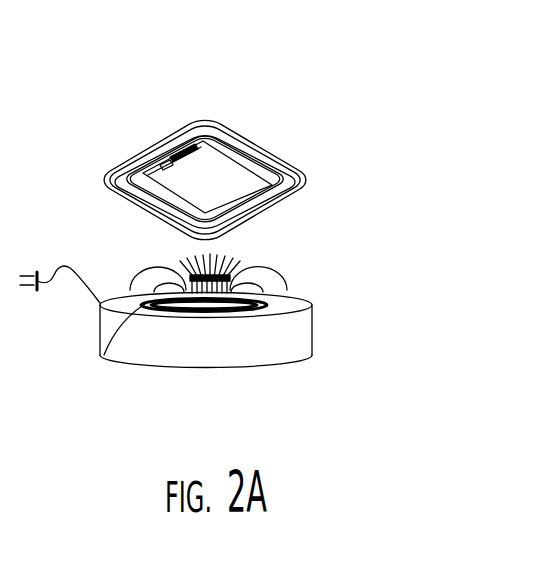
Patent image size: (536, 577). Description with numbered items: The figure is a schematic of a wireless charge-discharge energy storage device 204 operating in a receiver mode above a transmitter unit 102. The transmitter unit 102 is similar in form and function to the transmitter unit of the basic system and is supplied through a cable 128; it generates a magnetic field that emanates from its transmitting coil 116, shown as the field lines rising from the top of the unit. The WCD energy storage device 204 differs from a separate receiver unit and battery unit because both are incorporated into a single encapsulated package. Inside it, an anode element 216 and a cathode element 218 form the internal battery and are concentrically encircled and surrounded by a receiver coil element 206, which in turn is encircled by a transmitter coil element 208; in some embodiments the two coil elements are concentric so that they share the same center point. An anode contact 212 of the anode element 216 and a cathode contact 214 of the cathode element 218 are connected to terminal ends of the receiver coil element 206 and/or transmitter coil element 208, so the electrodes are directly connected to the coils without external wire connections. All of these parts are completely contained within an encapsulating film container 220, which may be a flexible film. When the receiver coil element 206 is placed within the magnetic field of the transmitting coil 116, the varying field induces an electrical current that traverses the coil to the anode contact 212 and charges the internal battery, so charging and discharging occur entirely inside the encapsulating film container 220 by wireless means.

The transmitter unit 102 is at (155, 366).
The transmitting coil 116 is at (100, 357).
The power cable with connector 128 is at (80, 286).
The WCD energy storage device 204 is at (202, 98).
The receiver coil element 206 is at (255, 163).
The transmitter coil element 208 is at (280, 162).
The anode contact 212 is at (163, 163).
The cathode contact 214 is at (183, 148).
The anode element 216 is at (213, 167).
The cathode element 218 is at (300, 158).
The encapsulating film container 220 is at (309, 187).